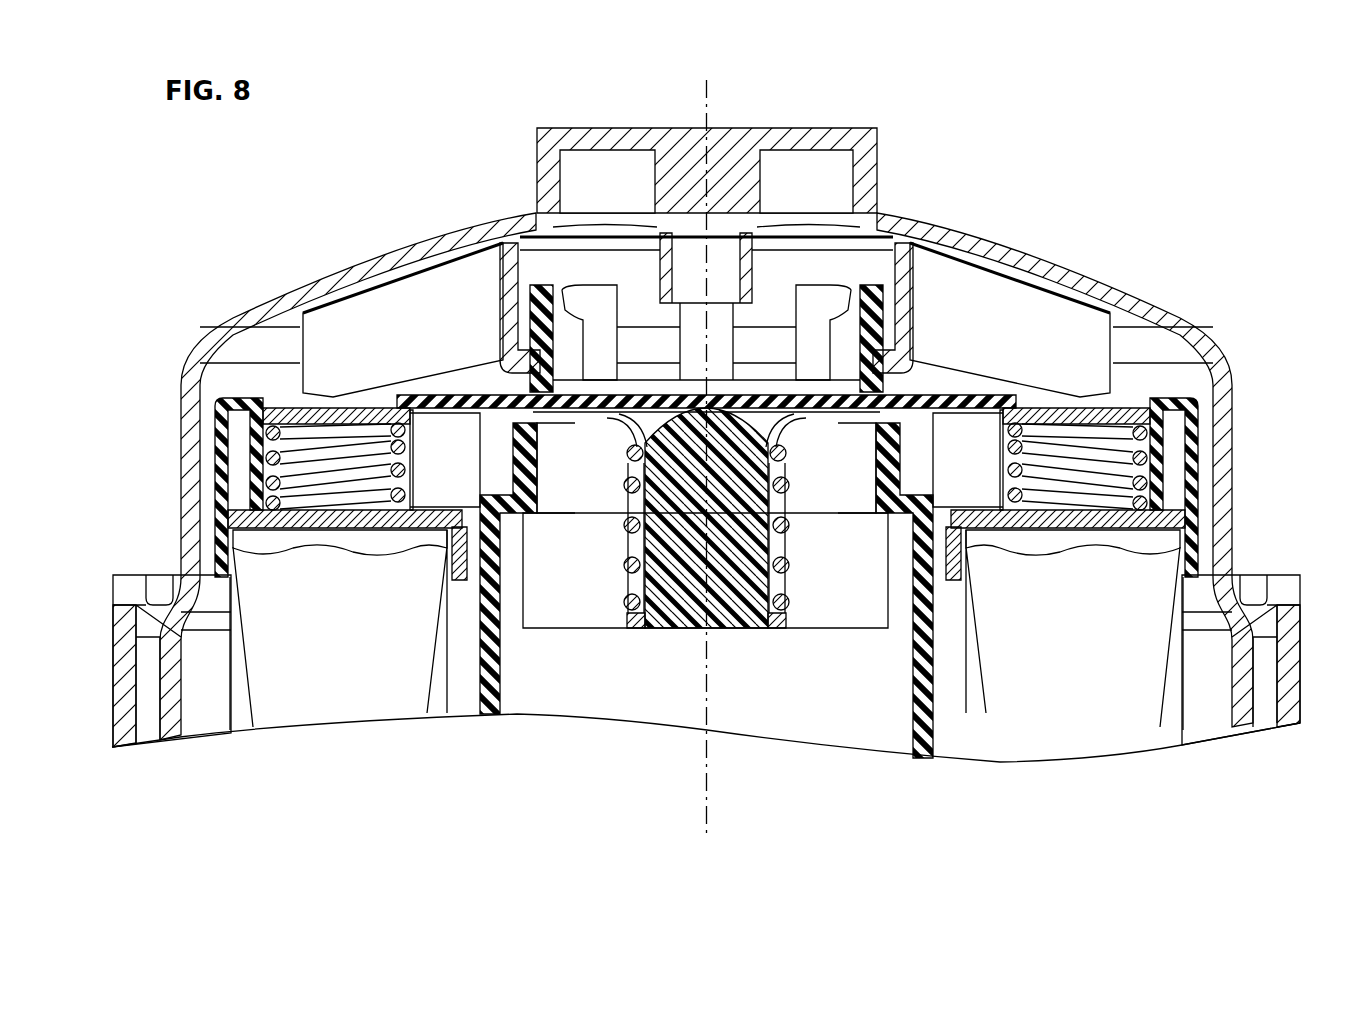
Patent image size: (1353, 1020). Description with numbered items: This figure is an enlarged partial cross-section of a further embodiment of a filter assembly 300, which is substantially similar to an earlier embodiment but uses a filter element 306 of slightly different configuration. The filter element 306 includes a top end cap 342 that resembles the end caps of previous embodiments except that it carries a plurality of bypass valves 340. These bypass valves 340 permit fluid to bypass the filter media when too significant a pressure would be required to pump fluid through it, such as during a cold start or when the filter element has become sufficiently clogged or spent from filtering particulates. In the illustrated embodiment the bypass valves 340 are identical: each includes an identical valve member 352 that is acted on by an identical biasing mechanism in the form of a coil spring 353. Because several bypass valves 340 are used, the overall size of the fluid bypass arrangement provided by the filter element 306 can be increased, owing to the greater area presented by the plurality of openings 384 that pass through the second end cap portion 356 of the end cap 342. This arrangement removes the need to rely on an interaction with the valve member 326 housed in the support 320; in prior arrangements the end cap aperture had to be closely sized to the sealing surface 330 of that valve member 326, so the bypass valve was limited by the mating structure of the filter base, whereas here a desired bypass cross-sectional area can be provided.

The filter assembly 300 is at (1222, 283).
The filter element 306 is at (1208, 370).
The support 320 is at (937, 640).
The valve member 326 is at (748, 544).
The sealing surface 330 is at (817, 412).
The bypass valve 340 is at (377, 336).
The top end cap 342 is at (1153, 355).
The valve member 352 is at (330, 405).
The coil spring 353 is at (270, 433).
The second end cap portion 356 is at (461, 396).
The opening 384 is at (288, 386).